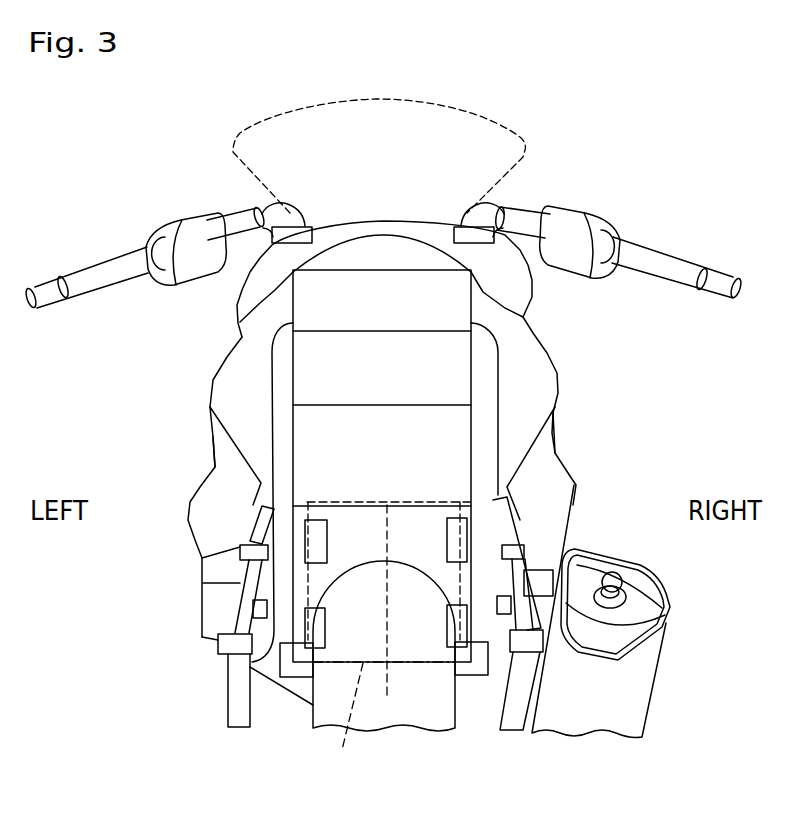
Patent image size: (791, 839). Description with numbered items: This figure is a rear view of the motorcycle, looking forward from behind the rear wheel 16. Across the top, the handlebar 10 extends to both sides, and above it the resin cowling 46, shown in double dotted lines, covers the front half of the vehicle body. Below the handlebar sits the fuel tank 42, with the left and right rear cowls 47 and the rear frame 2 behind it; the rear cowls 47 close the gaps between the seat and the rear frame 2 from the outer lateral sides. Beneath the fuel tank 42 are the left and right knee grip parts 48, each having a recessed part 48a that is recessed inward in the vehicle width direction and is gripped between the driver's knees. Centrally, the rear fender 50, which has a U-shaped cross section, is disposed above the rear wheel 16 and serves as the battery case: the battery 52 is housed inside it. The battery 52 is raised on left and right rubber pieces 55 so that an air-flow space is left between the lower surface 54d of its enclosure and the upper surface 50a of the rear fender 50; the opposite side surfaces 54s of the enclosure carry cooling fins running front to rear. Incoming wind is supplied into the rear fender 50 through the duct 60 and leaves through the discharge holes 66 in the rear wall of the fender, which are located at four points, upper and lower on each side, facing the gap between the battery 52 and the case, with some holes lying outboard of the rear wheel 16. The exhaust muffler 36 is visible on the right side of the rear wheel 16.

The rear frame 2 is at (273, 430).
The handlebar 10 is at (227, 213).
The rear wheel 16 is at (433, 647).
The exhaust muffler 36 is at (624, 611).
The fuel tank 42 is at (520, 288).
The cowling 46 is at (493, 122).
The rear cowl 47 is at (235, 372).
The knee grip part 48 is at (188, 520).
The recessed part 48a is at (212, 472).
The rear fender 50 is at (457, 373).
The upper surface of the rear fender 50a is at (342, 750).
The battery 52 is at (437, 497).
The lower surface of the enclosure 54d is at (387, 700).
The side surface of the enclosure 54s is at (287, 572).
The rubber piece 55 is at (340, 657).
The duct 60 is at (540, 596).
The discharge hole 66 is at (297, 507).